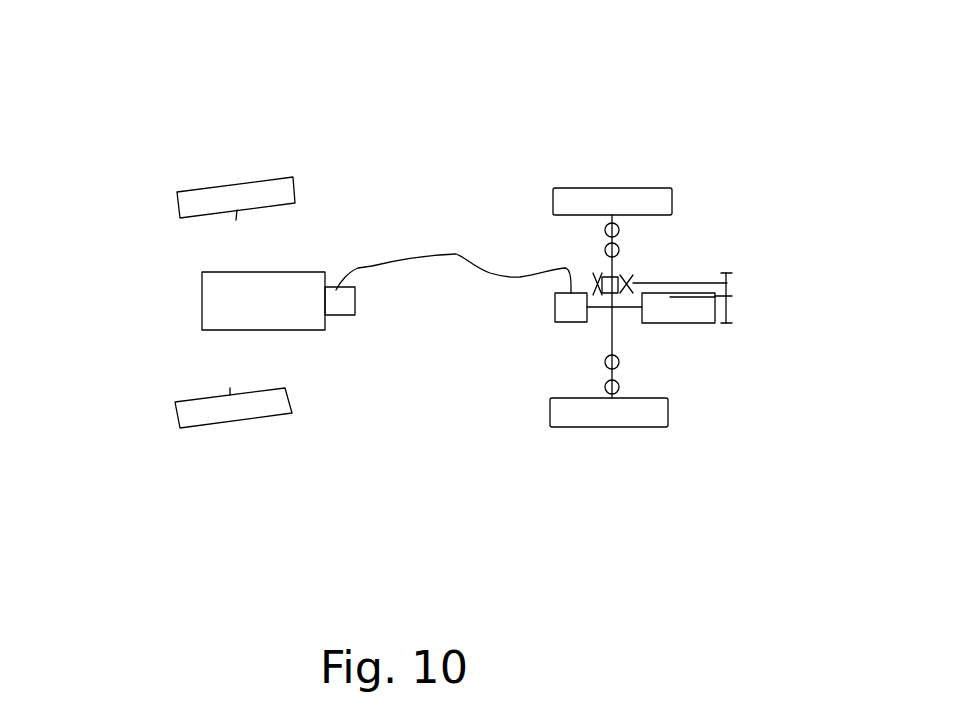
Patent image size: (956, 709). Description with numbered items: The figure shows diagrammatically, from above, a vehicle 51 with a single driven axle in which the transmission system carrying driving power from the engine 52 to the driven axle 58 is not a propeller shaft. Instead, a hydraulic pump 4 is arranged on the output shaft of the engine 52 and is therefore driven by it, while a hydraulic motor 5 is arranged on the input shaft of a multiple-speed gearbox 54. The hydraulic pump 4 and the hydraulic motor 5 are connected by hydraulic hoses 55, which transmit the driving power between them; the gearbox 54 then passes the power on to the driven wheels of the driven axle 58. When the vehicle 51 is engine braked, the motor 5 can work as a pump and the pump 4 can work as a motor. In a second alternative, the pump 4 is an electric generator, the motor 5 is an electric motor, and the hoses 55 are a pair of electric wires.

The vehicle 51 is at (223, 77).
The engine 52 is at (225, 302).
The hydraulic pump 4 is at (334, 288).
The hydraulic hoses 55 is at (452, 253).
The driven axle 58 is at (621, 262).
The hydraulic motor 5 is at (575, 322).
The multiple-speed gearbox 54 is at (688, 310).